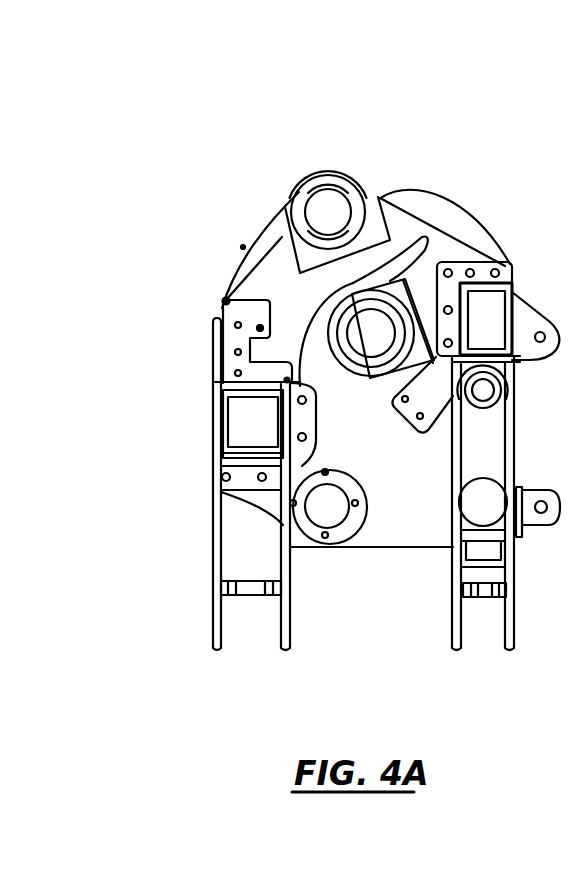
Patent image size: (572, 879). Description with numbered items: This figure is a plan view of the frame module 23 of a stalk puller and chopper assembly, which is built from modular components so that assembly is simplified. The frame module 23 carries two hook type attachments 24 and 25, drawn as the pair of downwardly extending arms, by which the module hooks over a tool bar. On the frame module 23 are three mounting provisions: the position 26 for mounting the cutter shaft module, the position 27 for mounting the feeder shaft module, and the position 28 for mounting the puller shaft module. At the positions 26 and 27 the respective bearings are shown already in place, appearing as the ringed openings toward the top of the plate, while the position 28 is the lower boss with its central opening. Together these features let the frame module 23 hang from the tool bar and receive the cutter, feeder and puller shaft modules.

The frame module 23 is at (142, 332).
The hook type attachment 24 is at (447, 662).
The hook type attachment 25 is at (224, 659).
The mounting provision for cutter shaft module 26 is at (328, 210).
The mounting provision for feeder shaft module 27 is at (372, 330).
The mounting provision for puller shaft module 28 is at (330, 497).